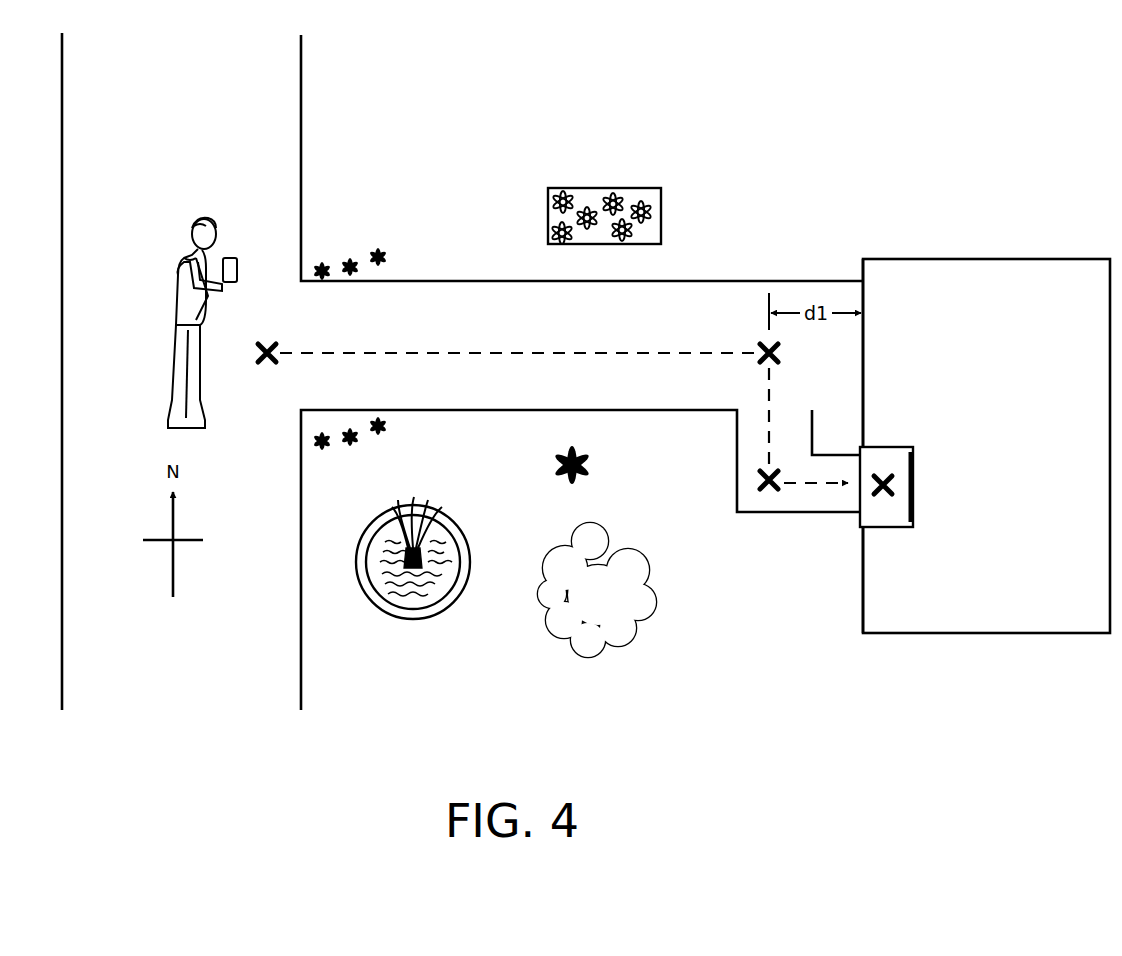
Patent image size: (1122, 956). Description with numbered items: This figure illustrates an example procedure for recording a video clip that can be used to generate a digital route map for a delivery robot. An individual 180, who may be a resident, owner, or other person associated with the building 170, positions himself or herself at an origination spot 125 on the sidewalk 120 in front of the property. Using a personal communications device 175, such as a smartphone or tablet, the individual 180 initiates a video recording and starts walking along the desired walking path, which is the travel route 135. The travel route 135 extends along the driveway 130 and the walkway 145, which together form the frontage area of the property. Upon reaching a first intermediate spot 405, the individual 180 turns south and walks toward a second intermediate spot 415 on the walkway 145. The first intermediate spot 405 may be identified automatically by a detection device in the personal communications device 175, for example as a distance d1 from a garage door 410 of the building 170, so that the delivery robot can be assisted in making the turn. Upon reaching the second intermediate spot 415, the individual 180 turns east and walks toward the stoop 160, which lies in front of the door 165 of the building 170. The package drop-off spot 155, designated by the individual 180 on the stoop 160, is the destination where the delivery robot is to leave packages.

The sidewalk 120 is at (127, 371).
The origination spot 125 is at (264, 370).
The driveway 130 is at (582, 372).
The travel route 135 is at (558, 352).
The walkway 145 is at (816, 495).
The package drop-off spot 155 is at (886, 468).
The stoop 160 is at (880, 528).
The door 165 is at (914, 485).
The building 170 is at (986, 446).
The personal communications device 175 is at (240, 268).
The individual 180 is at (150, 278).
The first intermediate spot 405 is at (751, 362).
The garage door 410 is at (863, 376).
The second intermediate spot 415 is at (776, 466).